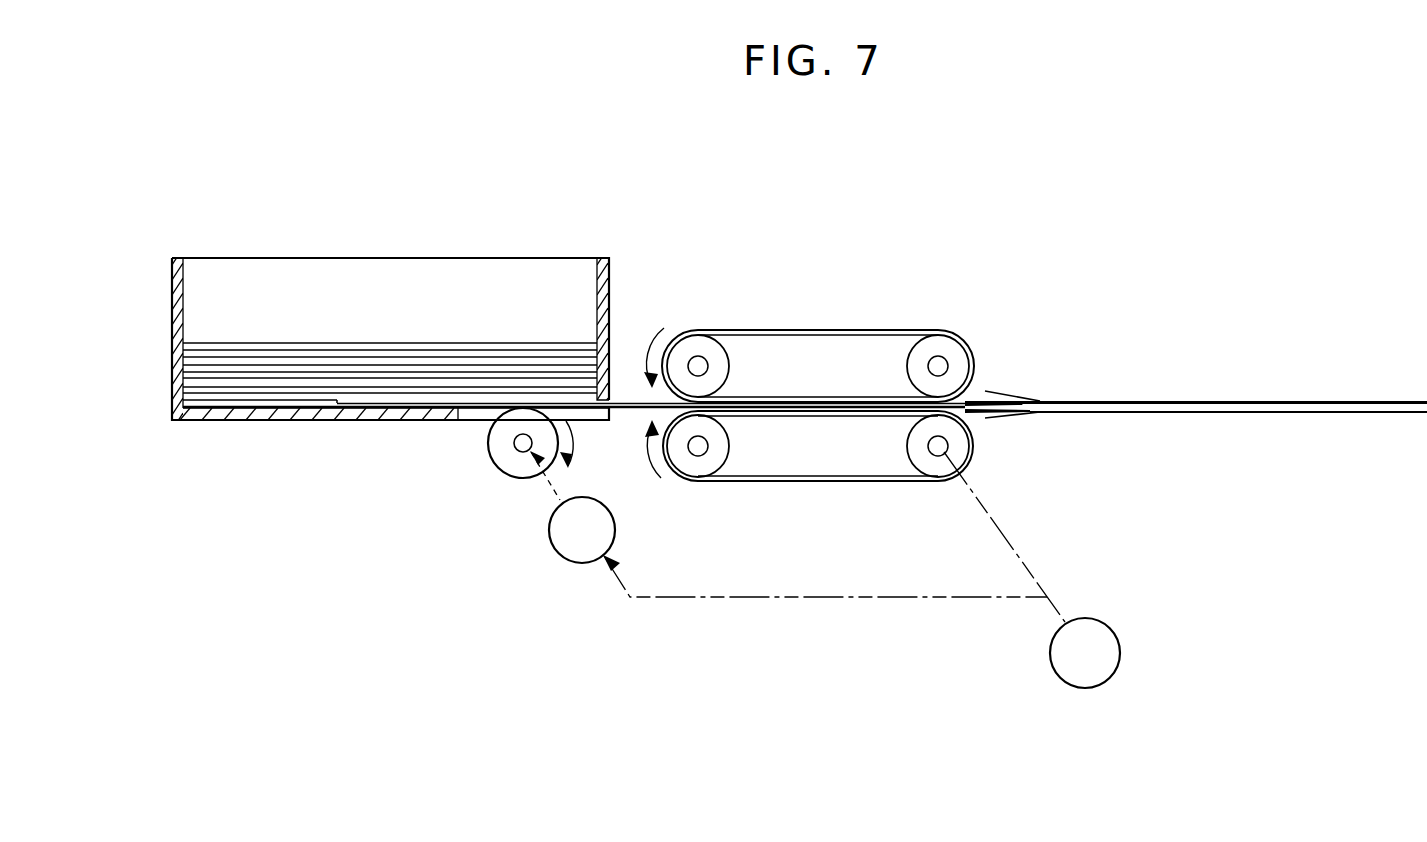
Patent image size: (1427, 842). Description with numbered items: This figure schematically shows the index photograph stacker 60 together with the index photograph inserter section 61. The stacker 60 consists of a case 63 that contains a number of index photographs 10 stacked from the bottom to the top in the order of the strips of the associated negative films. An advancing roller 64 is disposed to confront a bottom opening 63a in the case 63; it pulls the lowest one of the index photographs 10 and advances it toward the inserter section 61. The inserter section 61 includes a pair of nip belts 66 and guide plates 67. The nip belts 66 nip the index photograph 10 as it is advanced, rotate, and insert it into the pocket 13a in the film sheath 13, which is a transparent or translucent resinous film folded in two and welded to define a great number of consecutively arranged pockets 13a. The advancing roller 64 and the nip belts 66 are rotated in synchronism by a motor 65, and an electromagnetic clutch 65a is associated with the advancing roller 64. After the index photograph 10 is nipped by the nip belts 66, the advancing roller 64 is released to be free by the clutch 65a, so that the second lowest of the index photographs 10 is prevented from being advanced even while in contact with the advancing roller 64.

The index photograph stacker 60 is at (533, 180).
The index photograph inserter section 61 is at (840, 247).
The case 63 is at (403, 268).
The bottom opening 63a is at (298, 420).
The index photograph 10 is at (438, 346).
The advancing roller 64 is at (518, 476).
The motor 65 is at (1085, 689).
The electromagnetic clutch 65a is at (617, 528).
The nip belts 66 is at (763, 300).
The guide plates 67 is at (975, 386).
The film sheath 13 is at (1115, 364).
The pocket 13a is at (1215, 412).